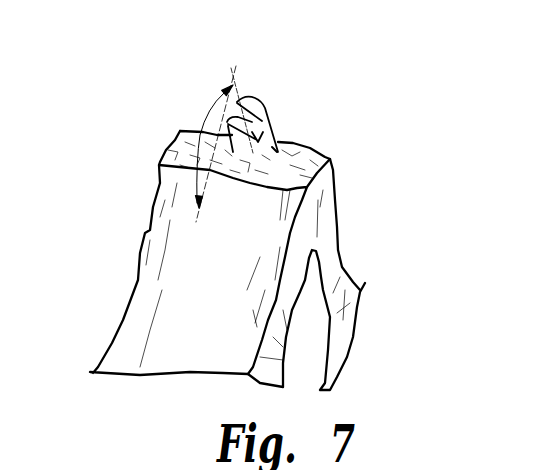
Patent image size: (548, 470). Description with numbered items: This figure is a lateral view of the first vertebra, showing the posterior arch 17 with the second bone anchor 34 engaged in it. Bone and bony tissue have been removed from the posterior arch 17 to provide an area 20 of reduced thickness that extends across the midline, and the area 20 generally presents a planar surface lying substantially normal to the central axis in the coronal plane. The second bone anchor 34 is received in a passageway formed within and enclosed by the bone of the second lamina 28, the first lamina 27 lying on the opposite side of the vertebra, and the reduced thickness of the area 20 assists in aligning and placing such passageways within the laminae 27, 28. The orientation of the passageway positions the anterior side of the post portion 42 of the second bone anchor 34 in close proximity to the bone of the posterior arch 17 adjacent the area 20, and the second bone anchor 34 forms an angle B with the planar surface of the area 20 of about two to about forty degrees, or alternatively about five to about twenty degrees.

The posterior arch 17 is at (157, 163).
The area of reduced thickness 20 is at (182, 132).
The first lamina 27 is at (138, 242).
The second lamina 28 is at (337, 222).
The second bone anchor 34 is at (260, 97).
The post portion 42 is at (278, 147).
The angle B is at (199, 130).